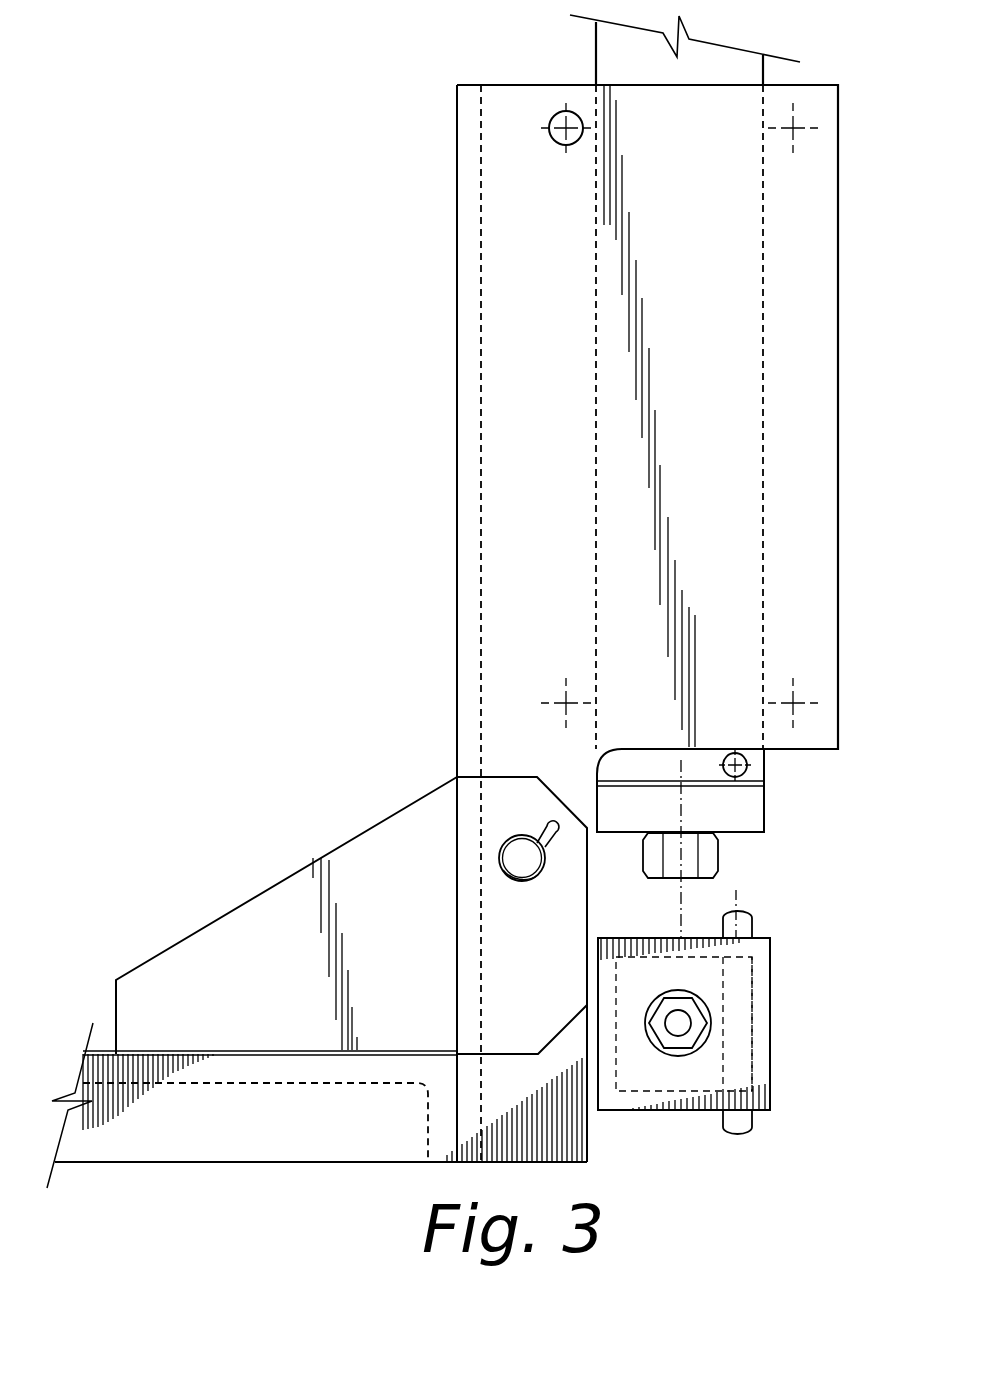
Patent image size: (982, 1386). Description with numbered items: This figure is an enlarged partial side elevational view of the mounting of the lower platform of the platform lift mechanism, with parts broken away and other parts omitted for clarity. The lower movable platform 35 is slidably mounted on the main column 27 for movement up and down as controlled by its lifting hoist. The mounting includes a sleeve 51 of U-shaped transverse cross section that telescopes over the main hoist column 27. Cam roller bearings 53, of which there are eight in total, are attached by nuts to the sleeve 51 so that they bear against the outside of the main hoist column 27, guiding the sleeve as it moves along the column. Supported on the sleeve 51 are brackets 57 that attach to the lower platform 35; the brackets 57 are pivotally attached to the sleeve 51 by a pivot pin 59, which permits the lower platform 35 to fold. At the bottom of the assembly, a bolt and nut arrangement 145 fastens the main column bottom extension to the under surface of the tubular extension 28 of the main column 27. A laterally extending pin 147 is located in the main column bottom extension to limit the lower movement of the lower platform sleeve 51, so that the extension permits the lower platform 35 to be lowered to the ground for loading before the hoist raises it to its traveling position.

The main column 27 is at (613, 68).
The sleeve 51 is at (818, 264).
The cam roller bearings 53 is at (562, 132).
The tubular extension 28 is at (747, 807).
The bolt and nut arrangement 145 is at (687, 848).
The laterally extending pin 147 is at (733, 754).
The brackets 57 is at (262, 917).
The pivot pin 59 is at (530, 866).
The lower movable platform 35 is at (285, 1138).